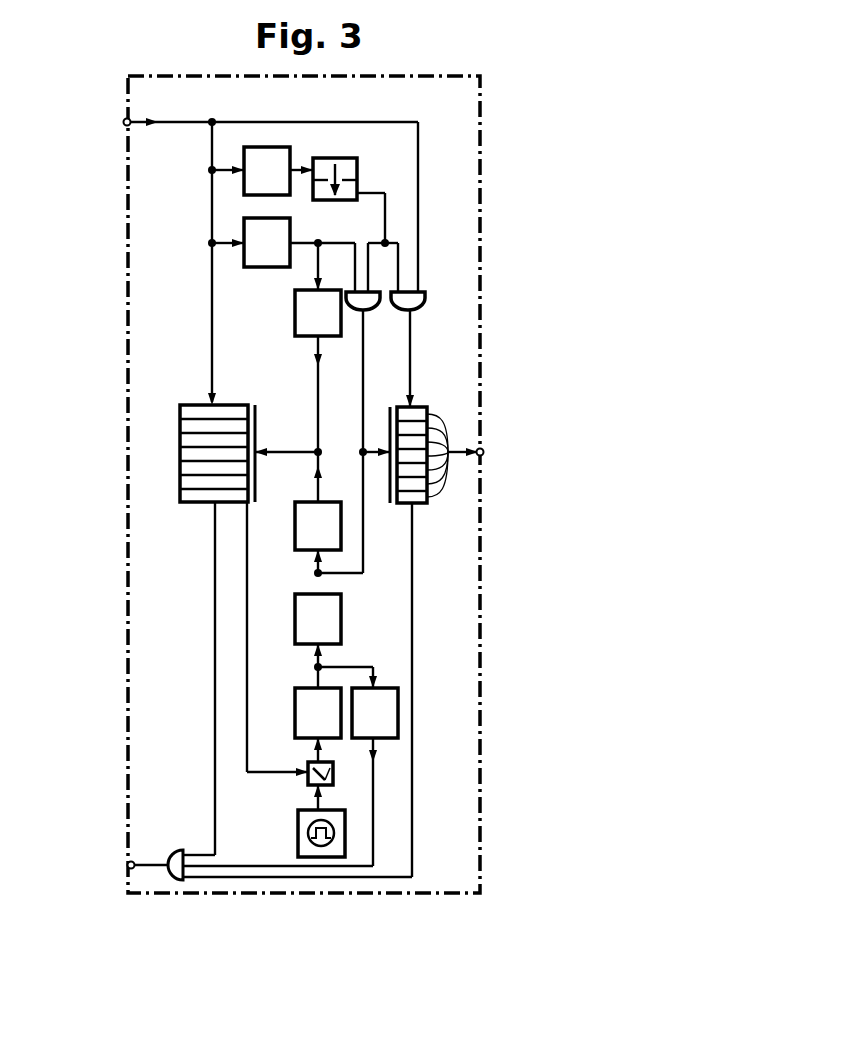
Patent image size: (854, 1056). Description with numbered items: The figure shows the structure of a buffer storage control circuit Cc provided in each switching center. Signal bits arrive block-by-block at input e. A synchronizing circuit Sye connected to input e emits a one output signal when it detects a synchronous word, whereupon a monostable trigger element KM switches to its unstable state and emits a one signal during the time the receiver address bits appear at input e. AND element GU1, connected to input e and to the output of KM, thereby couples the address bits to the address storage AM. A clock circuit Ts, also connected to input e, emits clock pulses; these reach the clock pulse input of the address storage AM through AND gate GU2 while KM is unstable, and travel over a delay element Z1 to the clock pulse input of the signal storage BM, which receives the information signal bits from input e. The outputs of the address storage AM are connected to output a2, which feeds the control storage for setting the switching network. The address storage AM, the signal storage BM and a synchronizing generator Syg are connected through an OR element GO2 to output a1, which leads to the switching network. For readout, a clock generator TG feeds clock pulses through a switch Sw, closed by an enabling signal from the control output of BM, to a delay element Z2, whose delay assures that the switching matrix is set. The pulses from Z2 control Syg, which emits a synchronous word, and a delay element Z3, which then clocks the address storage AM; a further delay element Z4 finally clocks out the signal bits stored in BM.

The buffer storage control circuit Cc is at (166, 324).
The input e is at (260, 256).
The synchronizing circuit Sye is at (244, 160).
The monostable trigger element KM is at (322, 155).
The clock circuit Ts is at (252, 230).
The delay element Z1 is at (295, 314).
The AND gate GU2 is at (370, 308).
The AND element GU1 is at (416, 308).
The signal storage BM is at (165, 538).
The address storage AM is at (432, 408).
The output a2 is at (485, 454).
The delay element Z4 is at (288, 552).
The delay element Z3 is at (341, 632).
The delay element Z2 is at (295, 726).
The synchronizing generator Syg is at (398, 727).
The switch Sw is at (308, 783).
The clock generator TG is at (298, 828).
The OR element GO2 is at (170, 843).
The output a1 is at (134, 867).